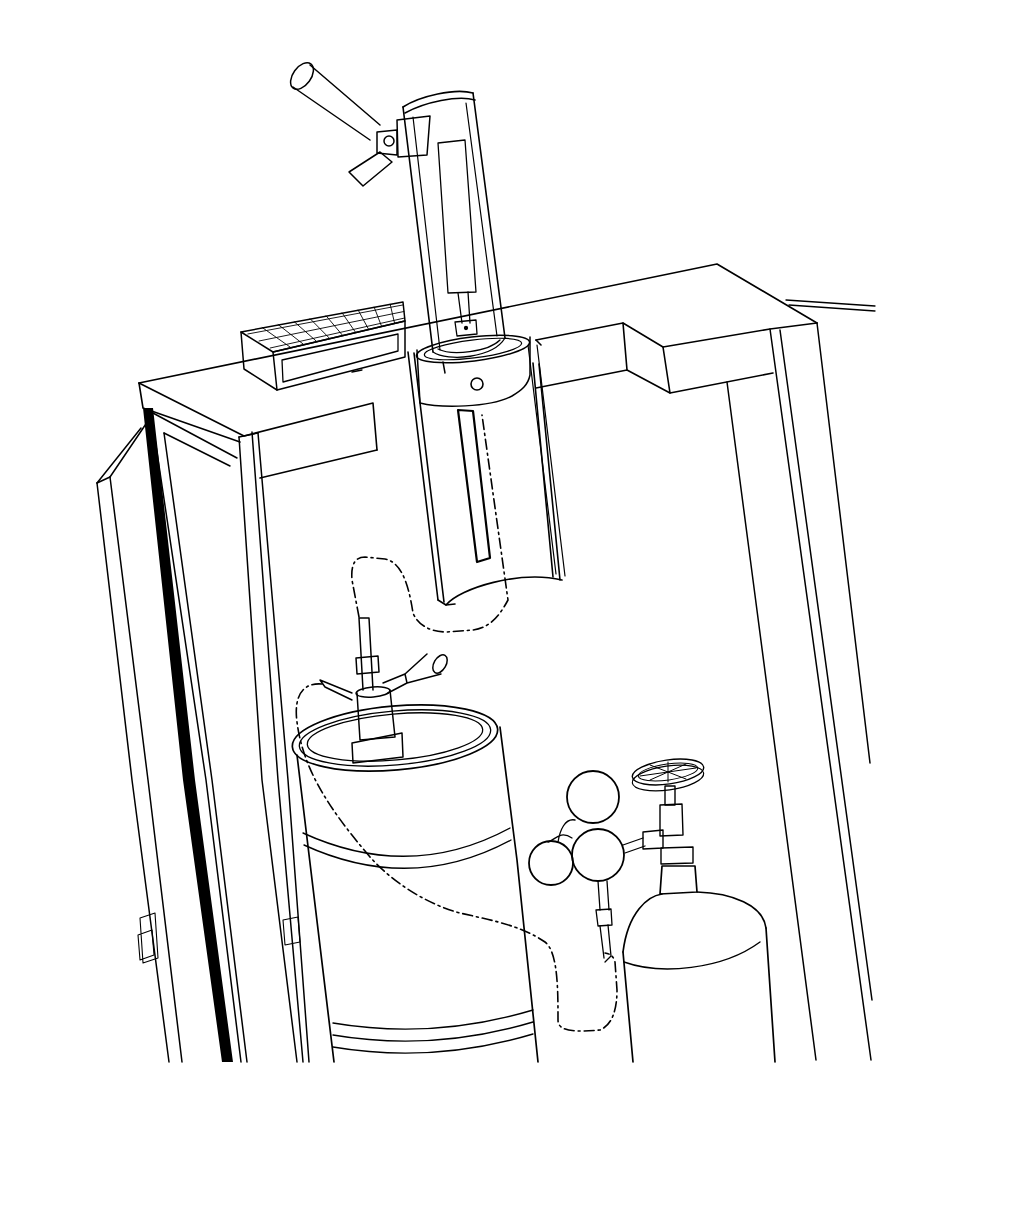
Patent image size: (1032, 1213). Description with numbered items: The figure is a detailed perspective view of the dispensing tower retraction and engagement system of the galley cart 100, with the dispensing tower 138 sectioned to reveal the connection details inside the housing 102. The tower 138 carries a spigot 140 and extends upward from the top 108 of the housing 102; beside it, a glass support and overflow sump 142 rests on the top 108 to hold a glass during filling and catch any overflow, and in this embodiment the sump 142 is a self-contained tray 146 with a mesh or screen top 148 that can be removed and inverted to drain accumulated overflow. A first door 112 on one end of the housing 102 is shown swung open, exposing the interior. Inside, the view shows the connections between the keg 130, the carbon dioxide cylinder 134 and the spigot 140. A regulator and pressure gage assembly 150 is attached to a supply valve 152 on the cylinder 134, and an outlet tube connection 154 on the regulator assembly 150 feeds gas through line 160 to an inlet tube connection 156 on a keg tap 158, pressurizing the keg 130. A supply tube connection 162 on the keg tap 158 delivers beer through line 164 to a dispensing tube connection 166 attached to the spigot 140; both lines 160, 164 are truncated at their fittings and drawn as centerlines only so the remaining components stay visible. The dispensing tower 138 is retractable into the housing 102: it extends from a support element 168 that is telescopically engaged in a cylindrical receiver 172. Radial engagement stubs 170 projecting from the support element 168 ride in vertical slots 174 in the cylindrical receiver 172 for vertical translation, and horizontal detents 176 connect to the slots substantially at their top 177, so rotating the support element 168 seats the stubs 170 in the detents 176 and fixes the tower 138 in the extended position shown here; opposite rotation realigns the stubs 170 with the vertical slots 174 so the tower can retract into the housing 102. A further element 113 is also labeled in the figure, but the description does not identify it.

The galley cart 100 is at (210, 280).
The housing 102 is at (678, 267).
The top 108 is at (703, 297).
The first door 112 is at (118, 455).
The power cord 113 is at (820, 308).
The keg 130 is at (488, 728).
The CO2 cylinder 134 is at (710, 985).
The dispensing tower 138 is at (487, 163).
The spigot 140 is at (378, 113).
The glass support and overflow sump 142 is at (283, 323).
The tray 146 is at (258, 364).
The mesh or screen top 148 is at (337, 313).
The regulator and pressure gage assembly 150 is at (598, 848).
The supply valve 152 is at (677, 818).
The outlet tube connection 154 is at (612, 968).
The inlet tube connection 156 is at (350, 693).
The keg tap 158 is at (380, 717).
The line 160 is at (445, 910).
The supply tube connection 162 is at (360, 620).
The line 164 is at (490, 622).
The dispensing tube connection 166 is at (467, 290).
The support element 168 is at (510, 378).
The radial engagement stubs 170 is at (530, 358).
The cylindrical receiver 172 is at (553, 507).
The vertical slots 174 is at (473, 490).
The horizontal detents 176 is at (540, 335).
The top of the vertical slots 177 is at (355, 375).